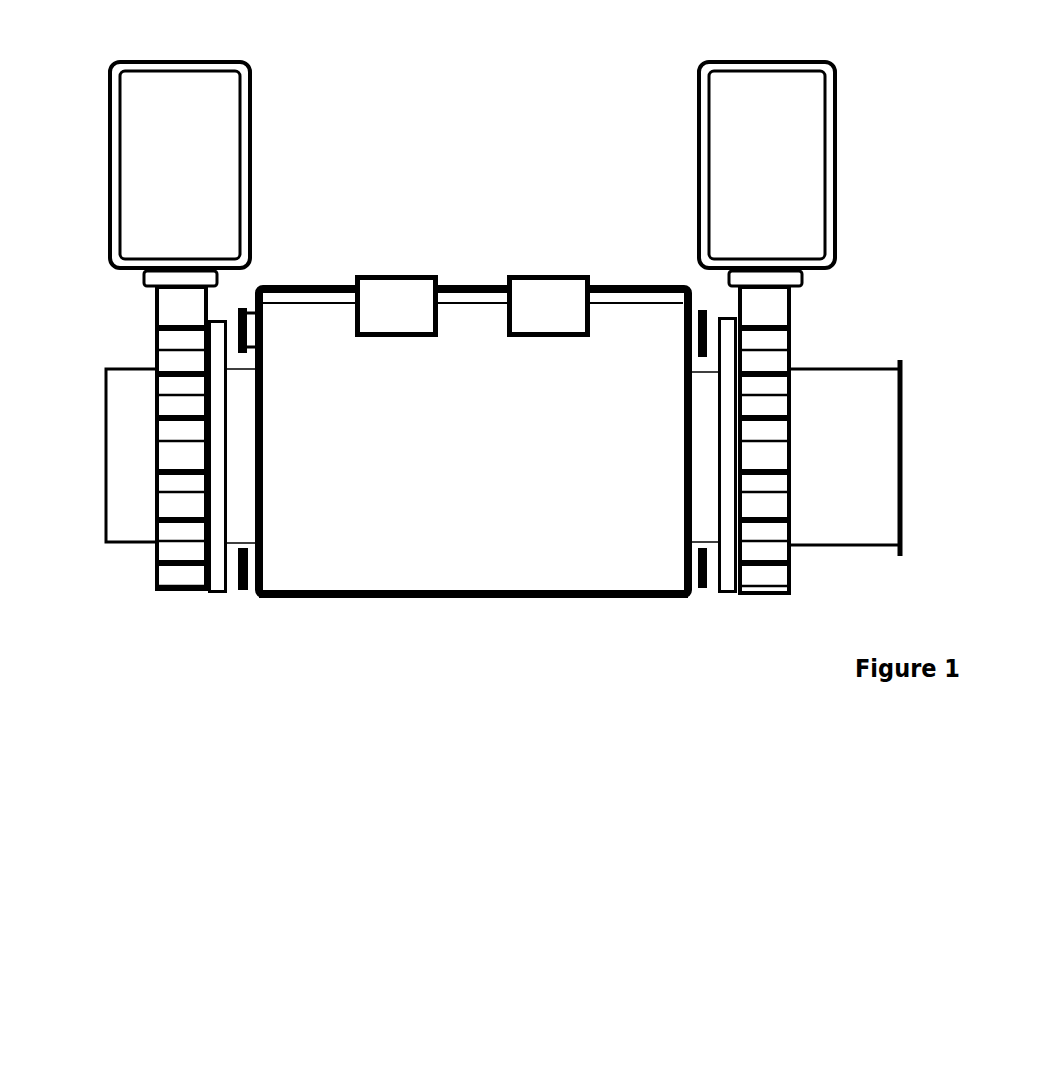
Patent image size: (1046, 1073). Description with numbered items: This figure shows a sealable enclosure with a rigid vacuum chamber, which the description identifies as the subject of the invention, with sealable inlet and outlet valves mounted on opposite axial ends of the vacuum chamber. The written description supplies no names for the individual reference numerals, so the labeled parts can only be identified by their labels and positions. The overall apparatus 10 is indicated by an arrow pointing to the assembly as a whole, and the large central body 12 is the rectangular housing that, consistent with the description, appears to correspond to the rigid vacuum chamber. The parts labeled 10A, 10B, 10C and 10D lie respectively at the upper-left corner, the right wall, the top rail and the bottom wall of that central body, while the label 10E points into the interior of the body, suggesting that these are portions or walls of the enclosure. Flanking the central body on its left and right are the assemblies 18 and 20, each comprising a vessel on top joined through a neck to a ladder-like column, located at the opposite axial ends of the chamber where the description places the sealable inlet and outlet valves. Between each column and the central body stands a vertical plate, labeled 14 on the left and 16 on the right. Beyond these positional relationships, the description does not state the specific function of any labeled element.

The apparatus 10 is at (393, 672).
The left mounting bracket 10A is at (243, 358).
The right side wall 10B is at (682, 360).
The top rail 10C is at (312, 287).
The bottom wall 10D is at (574, 598).
The interior chamber 10E is at (447, 510).
The housing 12 is at (463, 480).
The left plate 14 is at (213, 592).
The right plate 16 is at (704, 588).
The left cylinder assembly 18 is at (145, 574).
The right cylinder assembly 20 is at (776, 340).